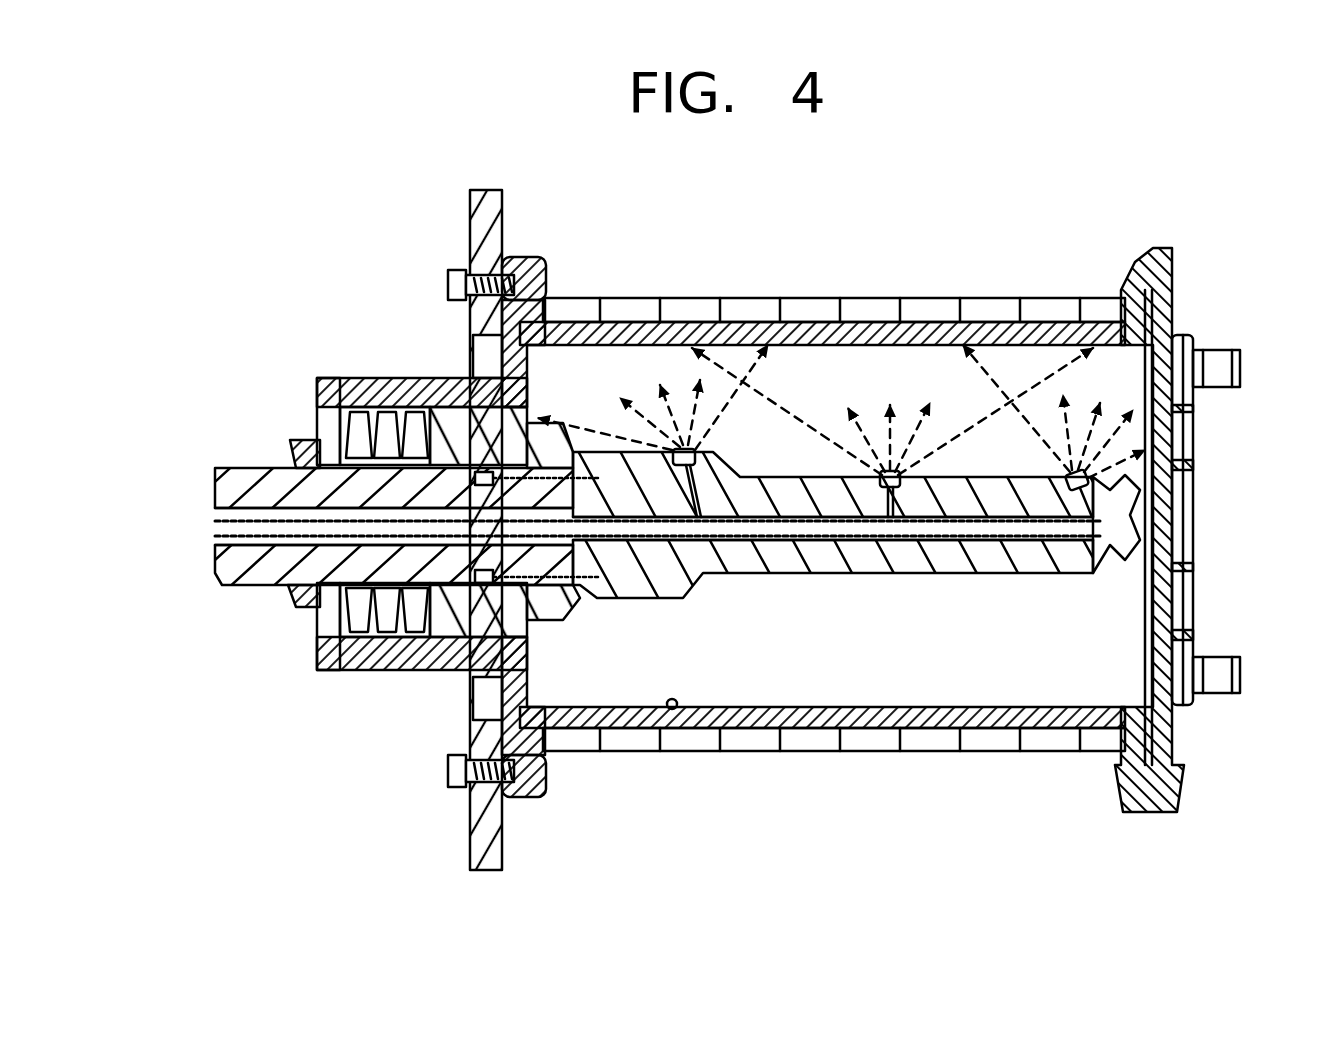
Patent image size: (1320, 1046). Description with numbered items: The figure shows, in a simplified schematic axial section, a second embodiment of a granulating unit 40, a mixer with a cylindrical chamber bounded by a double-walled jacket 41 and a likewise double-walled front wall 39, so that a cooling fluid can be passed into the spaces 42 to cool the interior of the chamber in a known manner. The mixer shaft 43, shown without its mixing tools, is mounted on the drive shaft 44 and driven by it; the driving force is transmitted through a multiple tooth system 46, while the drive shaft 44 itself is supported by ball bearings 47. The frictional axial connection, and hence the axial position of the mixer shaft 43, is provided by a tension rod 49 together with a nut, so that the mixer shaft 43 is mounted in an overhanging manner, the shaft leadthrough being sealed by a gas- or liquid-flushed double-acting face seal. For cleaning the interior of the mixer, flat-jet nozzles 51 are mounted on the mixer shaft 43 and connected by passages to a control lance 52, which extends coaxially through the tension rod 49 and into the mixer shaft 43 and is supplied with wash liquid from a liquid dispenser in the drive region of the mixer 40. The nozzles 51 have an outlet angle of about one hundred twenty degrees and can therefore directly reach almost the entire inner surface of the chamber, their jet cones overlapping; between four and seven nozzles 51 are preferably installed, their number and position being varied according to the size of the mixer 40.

The front wall 39 is at (1197, 445).
The granulating unit 40 is at (945, 772).
The double-walled jacket 41 is at (668, 708).
The spaces 42 is at (862, 752).
The mixer shaft 43 is at (862, 590).
The drive shaft 44 is at (246, 592).
The multiple tooth system 46 is at (500, 597).
The ball bearing 47 is at (385, 405).
The tension rod 49 is at (210, 545).
The flat-jet nozzles 51 is at (676, 447).
The control lance 52 is at (1095, 562).